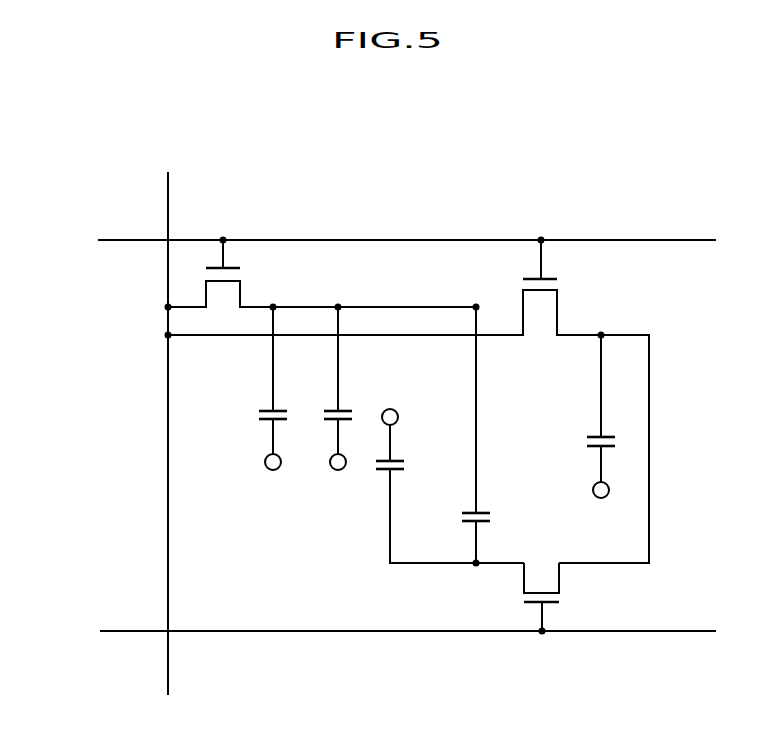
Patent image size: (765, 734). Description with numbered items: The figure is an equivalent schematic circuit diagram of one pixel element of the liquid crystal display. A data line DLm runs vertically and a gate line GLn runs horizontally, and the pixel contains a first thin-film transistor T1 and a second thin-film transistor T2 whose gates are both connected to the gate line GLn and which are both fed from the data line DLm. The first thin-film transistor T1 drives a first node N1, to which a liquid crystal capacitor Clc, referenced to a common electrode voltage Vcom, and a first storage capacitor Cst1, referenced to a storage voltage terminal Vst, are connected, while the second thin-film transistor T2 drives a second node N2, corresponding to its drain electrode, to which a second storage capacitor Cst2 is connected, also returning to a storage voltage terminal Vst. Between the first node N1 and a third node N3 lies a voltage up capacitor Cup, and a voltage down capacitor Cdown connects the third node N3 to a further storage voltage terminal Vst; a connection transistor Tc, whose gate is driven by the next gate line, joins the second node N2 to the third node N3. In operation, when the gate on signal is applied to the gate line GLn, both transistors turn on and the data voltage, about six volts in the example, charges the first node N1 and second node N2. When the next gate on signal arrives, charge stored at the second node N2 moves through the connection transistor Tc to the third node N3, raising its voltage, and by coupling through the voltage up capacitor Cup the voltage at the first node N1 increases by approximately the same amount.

The (m)-th data line DLm is at (167, 416).
The (n)-th gate line GLn is at (387, 239).
The first thin-film transistor T1 is at (219, 274).
The second thin-film transistor T2 is at (383, 288).
The connection transistor Tc is at (556, 599).
The liquid crystal capacitor Clc is at (253, 380).
The first storage capacitor Cst1 is at (318, 380).
The second storage capacitor Cst2 is at (571, 408).
The voltage down capacitor Cdown is at (426, 494).
The voltage up capacitor Cup is at (499, 533).
The first node N1 is at (379, 395).
The second node N2 is at (610, 433).
The third node N3 is at (493, 580).
The common electrode voltage Vcom is at (271, 478).
The storage voltage terminal Vst is at (467, 456).